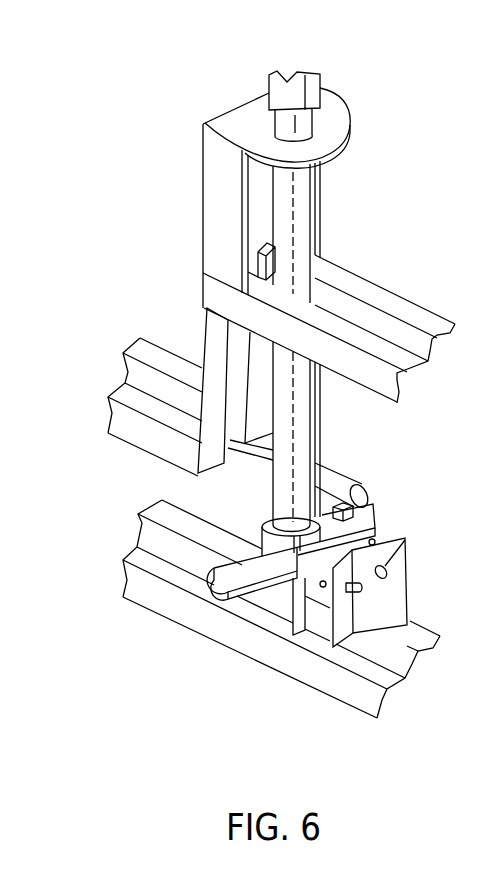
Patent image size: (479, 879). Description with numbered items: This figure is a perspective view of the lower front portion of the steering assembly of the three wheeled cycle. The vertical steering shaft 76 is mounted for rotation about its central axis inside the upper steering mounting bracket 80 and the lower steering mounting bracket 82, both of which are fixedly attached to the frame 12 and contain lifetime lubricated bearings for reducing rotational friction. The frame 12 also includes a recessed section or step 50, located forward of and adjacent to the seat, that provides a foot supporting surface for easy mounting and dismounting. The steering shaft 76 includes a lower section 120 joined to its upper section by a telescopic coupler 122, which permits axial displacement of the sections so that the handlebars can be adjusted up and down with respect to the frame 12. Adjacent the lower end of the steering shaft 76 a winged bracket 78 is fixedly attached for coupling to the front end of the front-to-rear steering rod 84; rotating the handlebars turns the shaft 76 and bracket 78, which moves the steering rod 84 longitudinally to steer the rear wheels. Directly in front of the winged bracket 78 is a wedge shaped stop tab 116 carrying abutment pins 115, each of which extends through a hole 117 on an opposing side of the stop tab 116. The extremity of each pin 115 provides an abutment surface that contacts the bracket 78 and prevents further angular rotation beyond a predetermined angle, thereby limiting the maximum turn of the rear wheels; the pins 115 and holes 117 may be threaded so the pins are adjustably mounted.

The frame 12 is at (362, 290).
The recessed section or step 50 is at (150, 340).
The vertical steering shaft 76 is at (302, 230).
The winged bracket 78 is at (218, 576).
The upper steering mounting bracket 80 is at (337, 128).
The lower steering mounting bracket 82 is at (296, 570).
The front-to-rear steering rod 84 is at (324, 472).
The abutment pins 115 is at (373, 540).
The wedge shaped stop tab 116 is at (397, 578).
The holes 117 is at (405, 540).
The lower section 120 is at (311, 189).
The telescopic coupler 122 is at (322, 86).